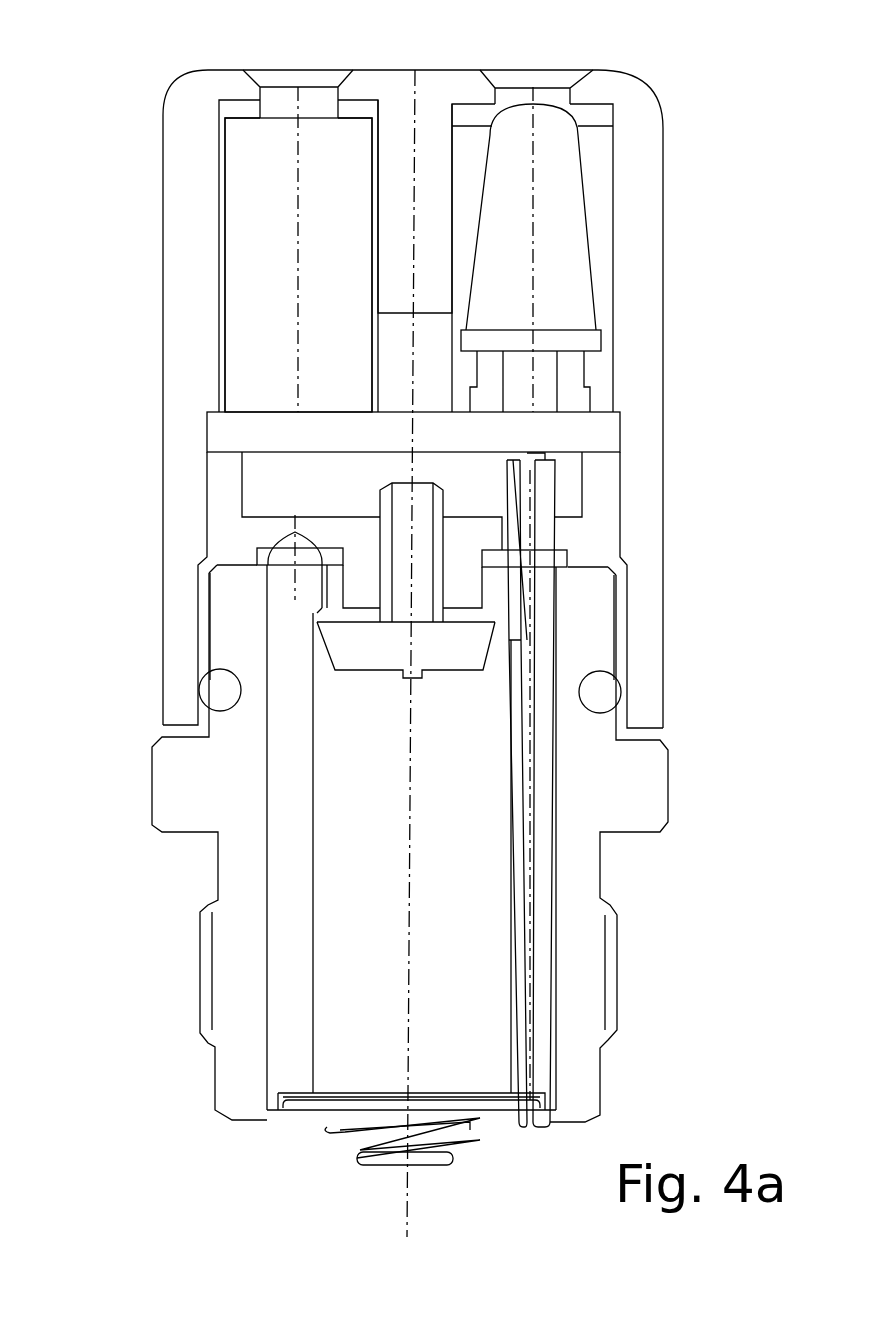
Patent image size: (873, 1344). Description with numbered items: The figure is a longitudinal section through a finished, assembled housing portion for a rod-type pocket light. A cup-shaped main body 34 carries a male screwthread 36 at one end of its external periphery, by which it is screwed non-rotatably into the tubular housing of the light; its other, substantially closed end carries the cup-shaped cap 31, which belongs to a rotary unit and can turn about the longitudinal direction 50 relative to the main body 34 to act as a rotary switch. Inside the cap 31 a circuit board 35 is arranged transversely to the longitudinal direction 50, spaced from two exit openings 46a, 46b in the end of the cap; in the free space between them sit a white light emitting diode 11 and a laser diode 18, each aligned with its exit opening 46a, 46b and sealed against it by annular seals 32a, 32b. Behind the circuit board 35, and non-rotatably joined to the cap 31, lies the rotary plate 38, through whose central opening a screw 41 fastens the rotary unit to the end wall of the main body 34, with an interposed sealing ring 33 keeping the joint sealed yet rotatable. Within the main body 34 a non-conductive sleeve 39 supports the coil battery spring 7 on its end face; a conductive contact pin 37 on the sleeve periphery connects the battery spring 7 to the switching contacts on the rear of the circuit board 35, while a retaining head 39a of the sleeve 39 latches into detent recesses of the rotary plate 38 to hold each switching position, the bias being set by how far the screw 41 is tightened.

The battery spring 7 is at (333, 1130).
The light emitting diode 11 is at (531, 249).
The laser diode 18 is at (298, 249).
The cap 31 is at (183, 259).
The annular seal 32a is at (237, 110).
The annular seal 32b is at (605, 118).
The sealing ring 33 is at (225, 692).
The main body 34 is at (172, 792).
The circuit board 35 is at (215, 428).
The male screwthread 36 is at (612, 973).
The contact pin 37 is at (510, 890).
The rotary plate 38 is at (212, 528).
The sleeve 39 is at (278, 868).
The retaining head 39a is at (280, 575).
The screw 41 is at (350, 657).
The exit opening 46a is at (275, 80).
The exit opening 46b is at (533, 80).
The longitudinal direction 50 is at (409, 945).